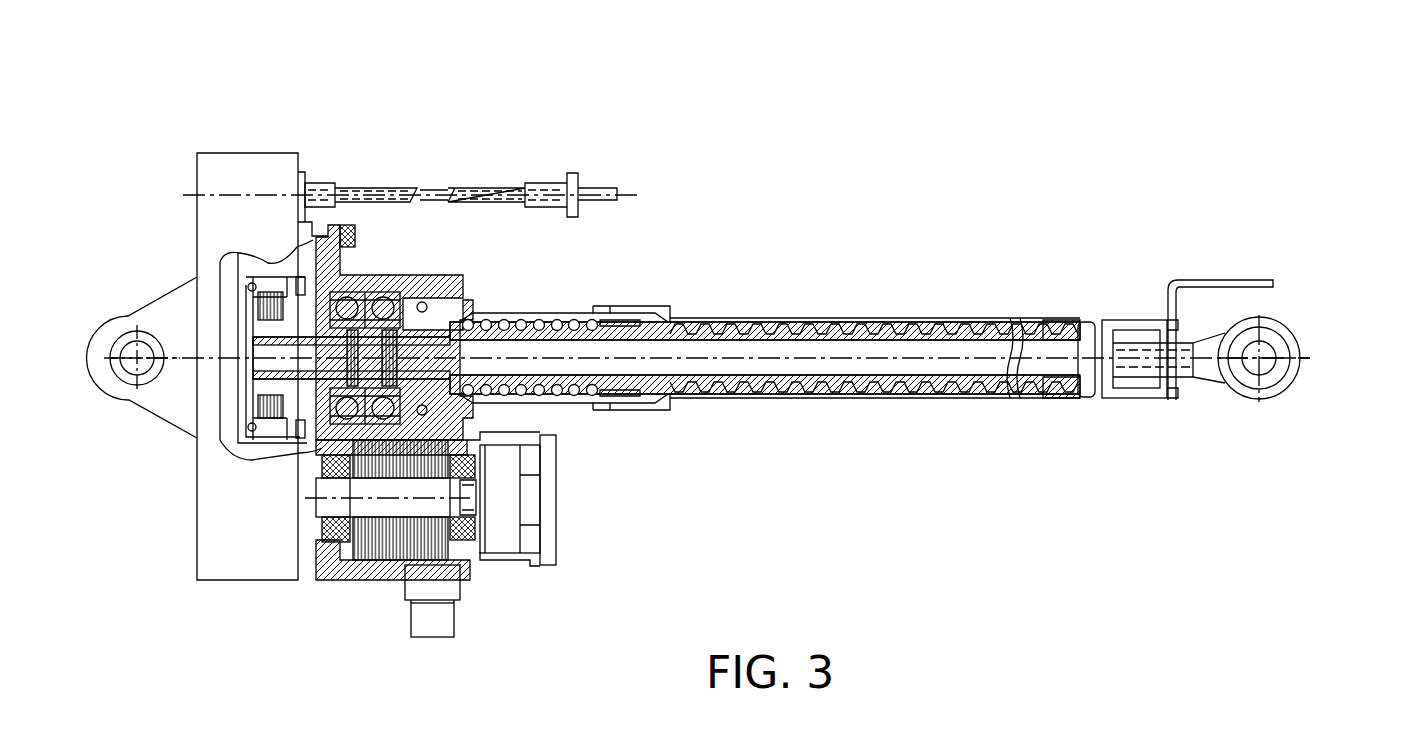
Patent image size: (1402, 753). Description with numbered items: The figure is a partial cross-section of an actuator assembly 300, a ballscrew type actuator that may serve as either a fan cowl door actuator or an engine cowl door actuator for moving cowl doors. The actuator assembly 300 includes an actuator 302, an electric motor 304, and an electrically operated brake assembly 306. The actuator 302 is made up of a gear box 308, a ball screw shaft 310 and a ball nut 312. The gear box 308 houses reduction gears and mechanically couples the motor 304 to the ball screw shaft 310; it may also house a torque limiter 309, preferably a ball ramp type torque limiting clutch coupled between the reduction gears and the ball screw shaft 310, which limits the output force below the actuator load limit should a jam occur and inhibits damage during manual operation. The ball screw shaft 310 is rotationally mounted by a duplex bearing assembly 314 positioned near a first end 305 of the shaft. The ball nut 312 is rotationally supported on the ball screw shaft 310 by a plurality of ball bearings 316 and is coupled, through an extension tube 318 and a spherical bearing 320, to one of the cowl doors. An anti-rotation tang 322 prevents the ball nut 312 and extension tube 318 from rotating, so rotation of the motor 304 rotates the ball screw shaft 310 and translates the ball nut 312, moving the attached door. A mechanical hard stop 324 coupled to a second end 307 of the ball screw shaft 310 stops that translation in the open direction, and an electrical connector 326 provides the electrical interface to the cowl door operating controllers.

The actuator assembly 300 is at (886, 162).
The actuator 302 is at (663, 287).
The electric motor 304 is at (368, 565).
The first end 305 is at (195, 438).
The electrically operated brake assembly 306 is at (528, 562).
The second end 307 is at (1062, 400).
The gear box 308 is at (197, 560).
The torque limiter 309 is at (195, 277).
The ball screw shaft 310 is at (728, 318).
The ball nut 312 is at (655, 412).
The bearing housing 314 is at (386, 282).
The ball bearings 316 is at (540, 312).
The extension tube 318 is at (872, 318).
The spherical bearing 320 is at (1285, 385).
The anti-rotation tang 322 is at (1227, 280).
The mechanical hard stop 324 is at (1052, 318).
The electrical connector 326 is at (432, 638).